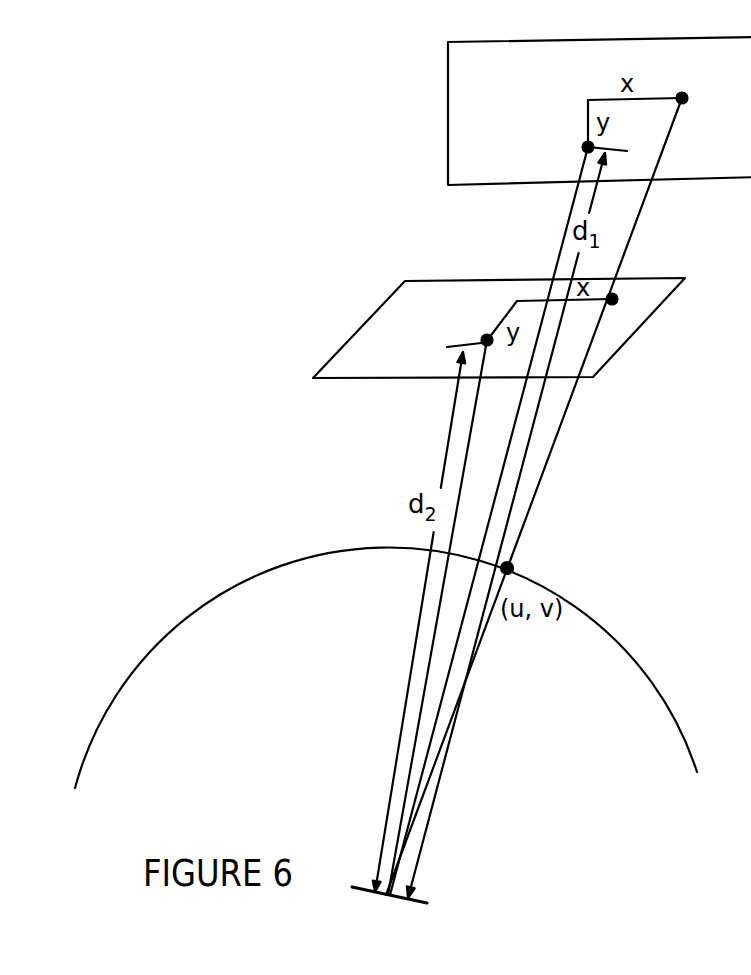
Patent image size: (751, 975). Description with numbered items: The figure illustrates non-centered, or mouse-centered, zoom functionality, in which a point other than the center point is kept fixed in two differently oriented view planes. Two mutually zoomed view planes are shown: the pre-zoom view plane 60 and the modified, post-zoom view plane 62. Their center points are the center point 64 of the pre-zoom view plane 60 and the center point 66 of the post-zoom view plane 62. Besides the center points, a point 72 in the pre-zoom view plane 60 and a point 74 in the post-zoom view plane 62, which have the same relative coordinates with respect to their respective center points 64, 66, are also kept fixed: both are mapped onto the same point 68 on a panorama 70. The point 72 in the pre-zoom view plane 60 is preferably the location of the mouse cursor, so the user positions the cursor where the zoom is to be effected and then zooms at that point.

The pre-zoom view plane 60 is at (462, 83).
The post-zoom view plane 62 is at (397, 312).
The center point of pre-zoom view plane 64 is at (583, 148).
The center point of post-zoom view plane 66 is at (480, 338).
The point on panorama 68 is at (514, 566).
The panorama 70 is at (245, 602).
The point in pre-zoom view plane 72 is at (694, 104).
The point in post-zoom view plane 74 is at (641, 312).